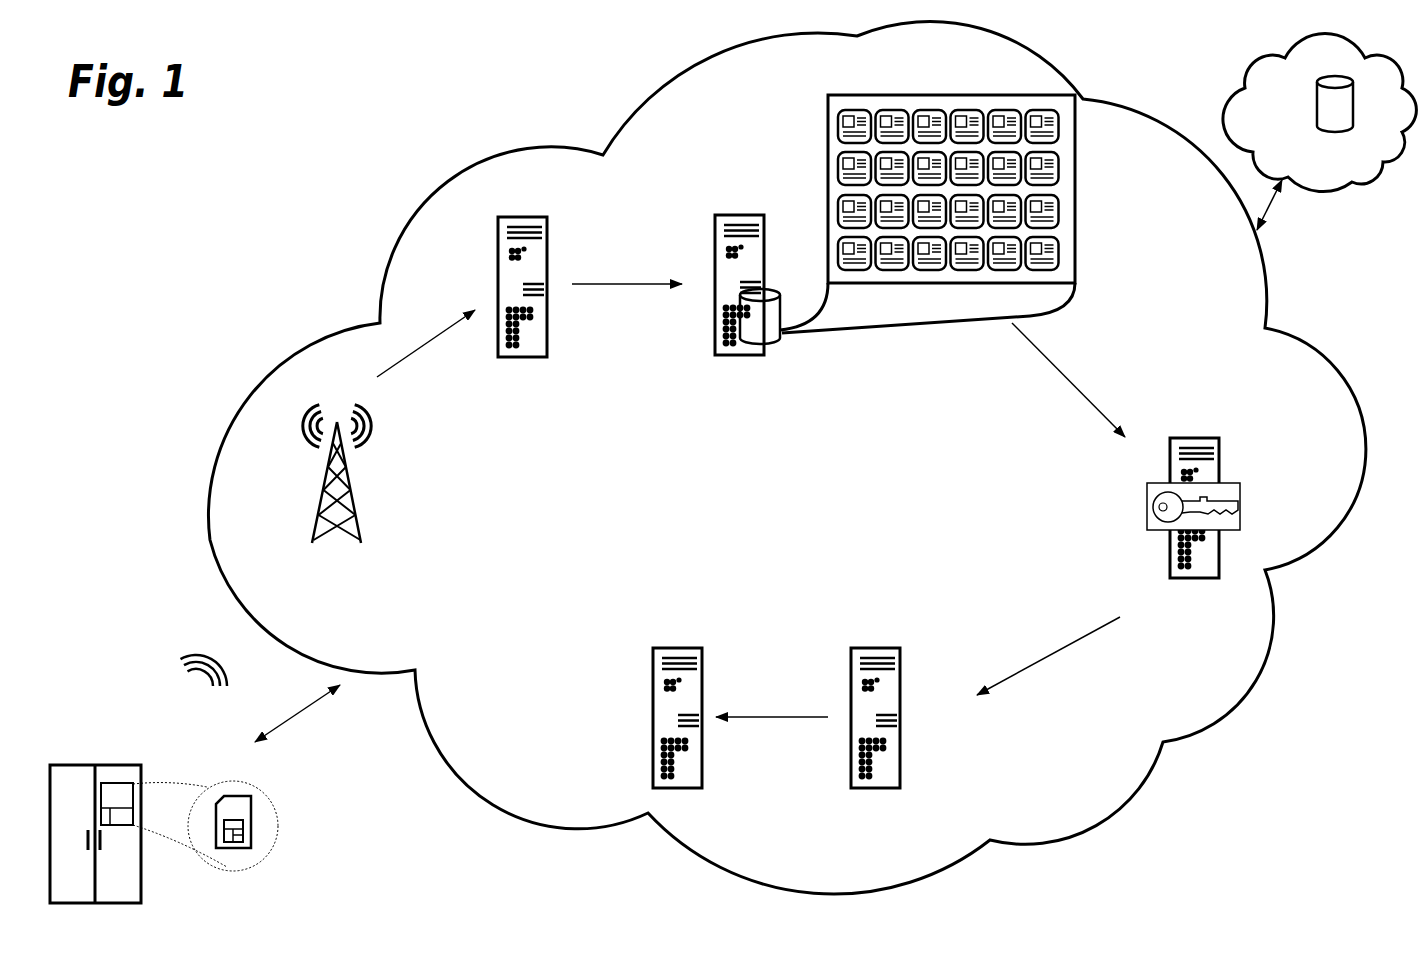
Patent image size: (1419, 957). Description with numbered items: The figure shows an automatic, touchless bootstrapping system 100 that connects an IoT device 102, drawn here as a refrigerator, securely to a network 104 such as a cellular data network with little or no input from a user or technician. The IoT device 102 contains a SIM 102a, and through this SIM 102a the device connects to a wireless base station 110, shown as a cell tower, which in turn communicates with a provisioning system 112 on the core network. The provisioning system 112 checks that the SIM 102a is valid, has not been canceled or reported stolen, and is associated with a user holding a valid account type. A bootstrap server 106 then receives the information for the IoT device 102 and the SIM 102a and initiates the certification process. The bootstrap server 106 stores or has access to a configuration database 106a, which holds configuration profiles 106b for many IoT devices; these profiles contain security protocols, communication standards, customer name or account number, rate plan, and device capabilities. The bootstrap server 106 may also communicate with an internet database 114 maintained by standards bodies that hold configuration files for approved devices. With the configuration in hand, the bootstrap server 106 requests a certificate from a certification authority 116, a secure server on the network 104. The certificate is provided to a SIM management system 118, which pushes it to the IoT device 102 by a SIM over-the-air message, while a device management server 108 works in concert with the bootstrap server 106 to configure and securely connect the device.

The system 100 is at (143, 227).
The IoT device 102 is at (140, 780).
The SIM 102a is at (253, 818).
The network 104 is at (1127, 113).
The bootstrap server 106 is at (718, 215).
The configuration database 106a is at (790, 338).
The configuration profiles 106b is at (825, 168).
The device management server 108 is at (700, 670).
The wireless base station 110 is at (343, 460).
The provisioning system 112 is at (548, 228).
The internet database 114 is at (1315, 105).
The certification authority 116 is at (1218, 448).
The SIM management system 118 is at (898, 672).